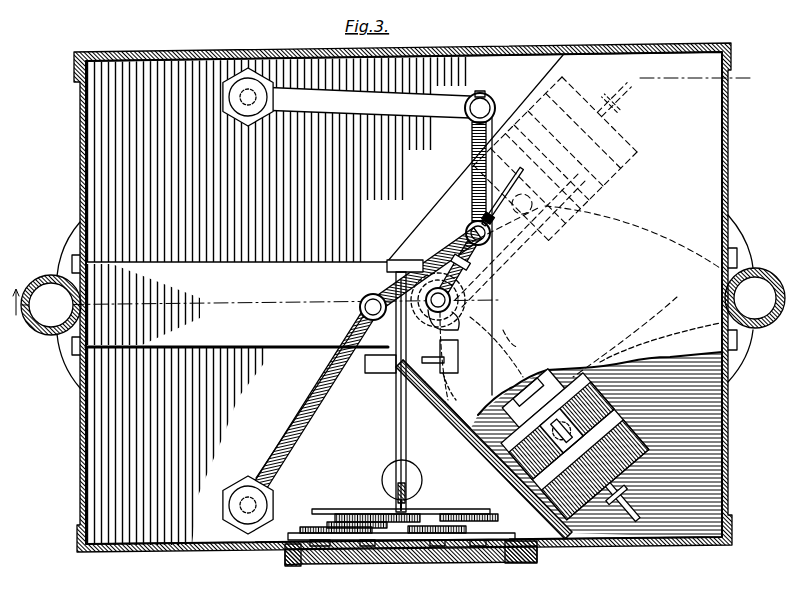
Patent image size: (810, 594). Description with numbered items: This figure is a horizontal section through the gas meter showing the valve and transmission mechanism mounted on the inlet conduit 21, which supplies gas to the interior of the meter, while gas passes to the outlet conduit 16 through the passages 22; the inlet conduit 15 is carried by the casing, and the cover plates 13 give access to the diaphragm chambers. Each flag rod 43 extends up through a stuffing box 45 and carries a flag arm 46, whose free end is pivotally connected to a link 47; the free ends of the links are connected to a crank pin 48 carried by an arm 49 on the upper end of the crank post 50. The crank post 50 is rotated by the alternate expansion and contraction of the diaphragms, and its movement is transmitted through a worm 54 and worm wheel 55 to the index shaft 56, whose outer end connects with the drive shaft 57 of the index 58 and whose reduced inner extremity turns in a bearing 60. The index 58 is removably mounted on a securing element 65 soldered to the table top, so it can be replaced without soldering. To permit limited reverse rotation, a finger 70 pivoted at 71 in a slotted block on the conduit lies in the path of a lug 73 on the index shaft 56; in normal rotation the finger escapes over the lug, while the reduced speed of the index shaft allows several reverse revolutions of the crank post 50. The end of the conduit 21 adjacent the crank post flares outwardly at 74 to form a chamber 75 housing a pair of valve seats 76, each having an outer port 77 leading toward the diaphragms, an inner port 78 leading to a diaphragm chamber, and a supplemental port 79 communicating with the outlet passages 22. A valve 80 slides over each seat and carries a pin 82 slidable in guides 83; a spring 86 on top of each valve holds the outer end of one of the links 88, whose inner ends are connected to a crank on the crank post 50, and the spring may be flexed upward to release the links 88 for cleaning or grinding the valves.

The cover plates 13 is at (392, 187).
The inlet conduit 15 is at (42, 336).
The outlet conduit 16 is at (752, 328).
The inlet conduit 21 is at (261, 304).
The passages 22 is at (655, 232).
The flag rod 43 is at (226, 504).
The stuffing boxes 45 is at (252, 486).
The flag arm 46 is at (405, 110).
The link 47 is at (420, 266).
The crank pin 48 is at (497, 248).
The arm 49 is at (510, 186).
The crank post 50 is at (436, 366).
The worm 54 is at (488, 297).
The worm wheel 55 is at (358, 318).
The index shaft 56 is at (394, 407).
The drive shaft 57 is at (396, 503).
The index 58 is at (472, 561).
The bearing 60 is at (388, 262).
The securing element 65 is at (382, 476).
The finger 70 is at (416, 384).
The pivot 71 is at (433, 403).
The lug 73 is at (374, 374).
The flared end 74 is at (447, 196).
The chamber 75 is at (712, 128).
The valve seats 76 is at (478, 456).
The outer port 77 is at (645, 360).
The inner port 78 is at (470, 440).
The supplemental port 79 is at (598, 366).
The valve 80 is at (610, 186).
The pin 82 is at (640, 78).
The guides 83 is at (630, 110).
The spring 86 is at (504, 410).
The links 88 is at (502, 330).